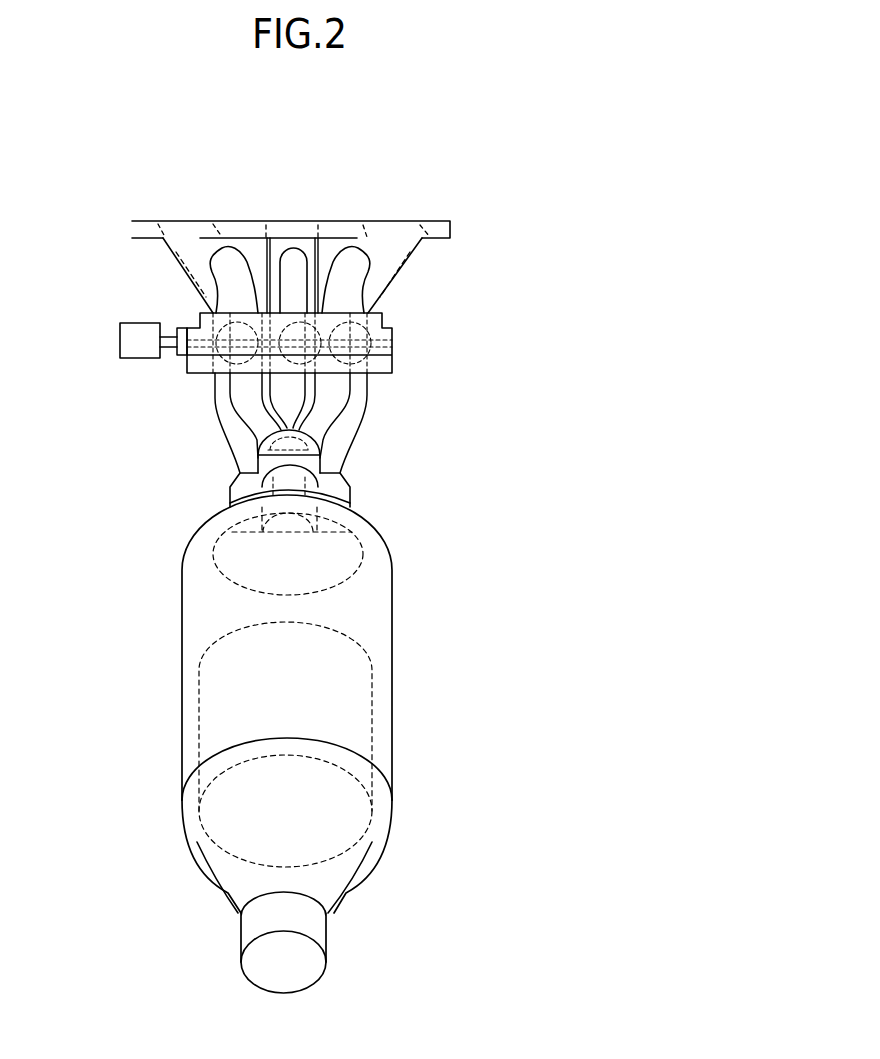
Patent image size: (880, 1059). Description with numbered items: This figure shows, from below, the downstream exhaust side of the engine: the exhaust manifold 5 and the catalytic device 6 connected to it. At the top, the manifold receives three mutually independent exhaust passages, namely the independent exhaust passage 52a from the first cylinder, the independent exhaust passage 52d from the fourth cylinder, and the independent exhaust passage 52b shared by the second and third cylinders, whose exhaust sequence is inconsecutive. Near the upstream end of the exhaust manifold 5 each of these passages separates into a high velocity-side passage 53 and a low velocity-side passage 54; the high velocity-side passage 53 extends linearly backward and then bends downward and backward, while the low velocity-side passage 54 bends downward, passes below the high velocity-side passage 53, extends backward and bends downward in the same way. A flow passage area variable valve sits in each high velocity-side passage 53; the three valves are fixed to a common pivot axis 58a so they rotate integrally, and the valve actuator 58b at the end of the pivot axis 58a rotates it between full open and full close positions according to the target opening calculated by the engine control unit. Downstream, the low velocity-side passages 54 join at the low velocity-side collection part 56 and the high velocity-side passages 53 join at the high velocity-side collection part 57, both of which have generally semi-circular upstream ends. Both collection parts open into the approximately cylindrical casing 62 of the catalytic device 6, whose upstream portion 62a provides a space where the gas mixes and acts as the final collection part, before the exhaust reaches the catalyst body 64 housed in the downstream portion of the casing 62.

The independent exhaust passage 52a is at (385, 240).
The independent exhaust passage 52b is at (285, 226).
The independent exhaust passage 52d is at (183, 226).
The high velocity-side passage 53 is at (302, 243).
The low velocity-side passage 54 is at (297, 271).
The exhaust manifold 5 is at (440, 339).
The pivot axis 58a is at (168, 352).
The valve actuator 58b is at (132, 360).
The high velocity-side collection part 57 is at (233, 478).
The low velocity-side collection part 56 is at (365, 512).
The casing 62 is at (392, 662).
The upstream portion of the casing 62a is at (372, 577).
The catalyst body 64 is at (372, 753).
The catalytic device 6 is at (455, 708).